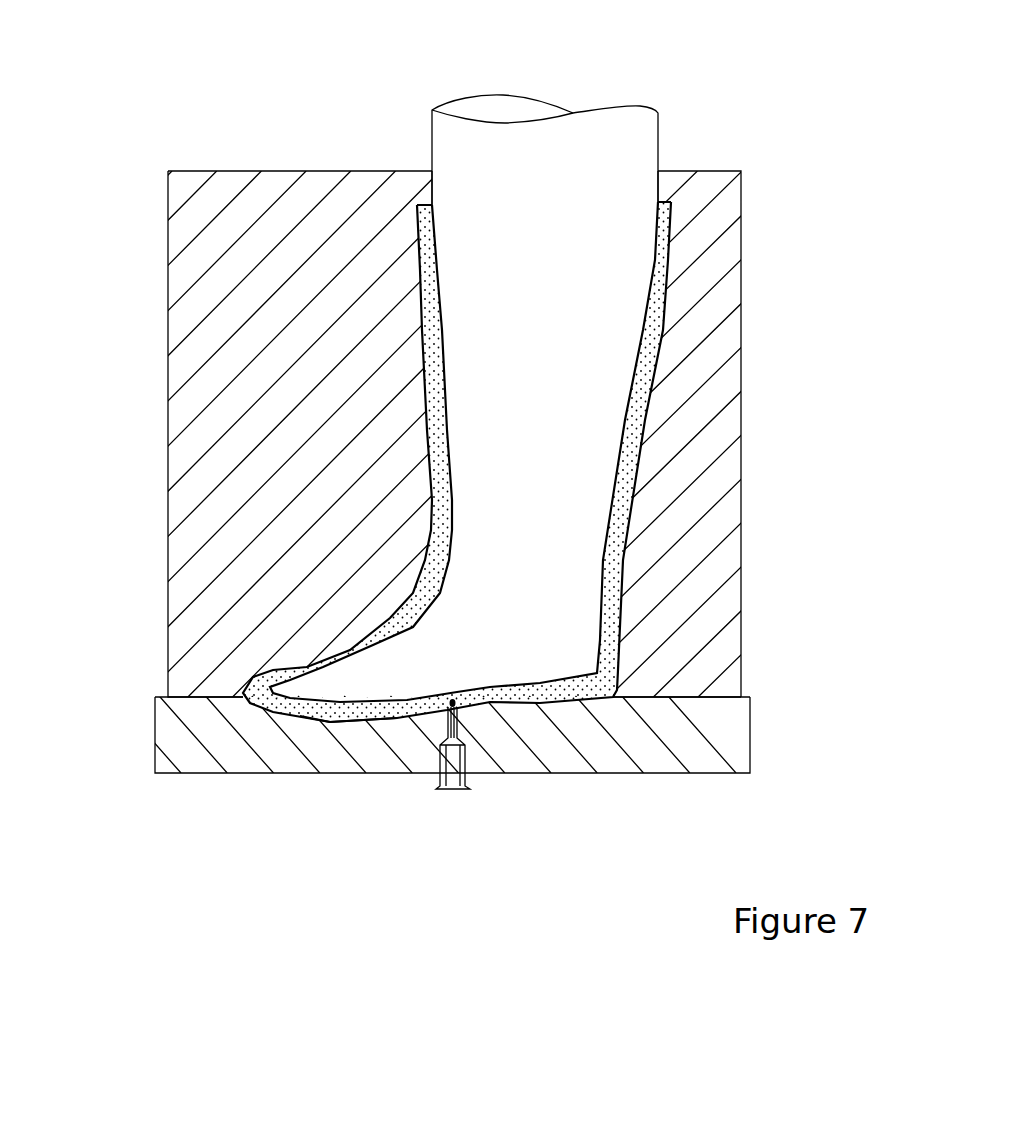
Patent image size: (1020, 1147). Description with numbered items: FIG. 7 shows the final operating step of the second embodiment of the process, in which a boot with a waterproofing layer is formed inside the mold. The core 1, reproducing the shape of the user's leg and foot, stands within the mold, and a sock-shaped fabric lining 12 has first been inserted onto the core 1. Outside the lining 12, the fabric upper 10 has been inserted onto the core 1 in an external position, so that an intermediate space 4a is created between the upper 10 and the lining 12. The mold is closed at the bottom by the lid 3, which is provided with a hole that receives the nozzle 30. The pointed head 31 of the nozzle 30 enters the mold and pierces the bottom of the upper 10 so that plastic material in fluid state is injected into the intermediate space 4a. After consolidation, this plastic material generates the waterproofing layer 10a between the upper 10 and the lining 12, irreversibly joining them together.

The core 1 is at (608, 167).
The lid 3 is at (732, 745).
The intermediate space 4a is at (640, 368).
The upper 10 is at (418, 253).
The waterproofing layer 10a is at (425, 203).
The fabric lining 12 is at (440, 233).
The nozzle 30 is at (440, 775).
The pointed head 31 is at (451, 699).